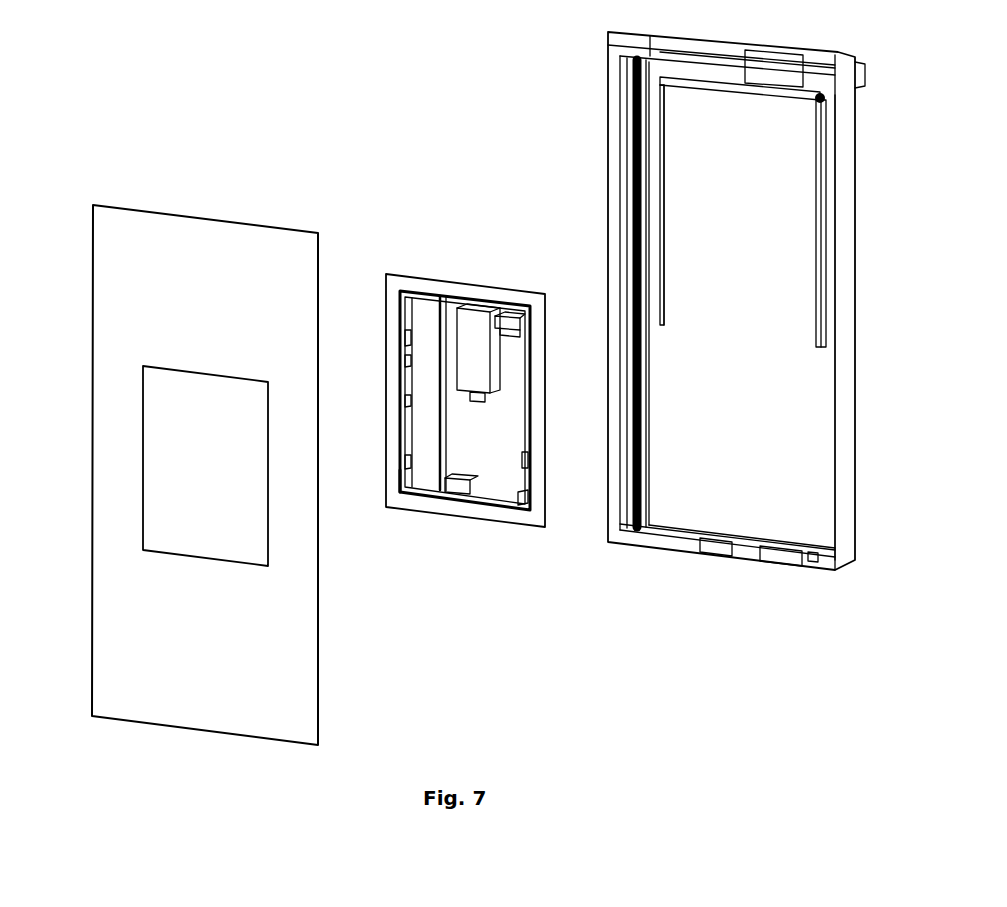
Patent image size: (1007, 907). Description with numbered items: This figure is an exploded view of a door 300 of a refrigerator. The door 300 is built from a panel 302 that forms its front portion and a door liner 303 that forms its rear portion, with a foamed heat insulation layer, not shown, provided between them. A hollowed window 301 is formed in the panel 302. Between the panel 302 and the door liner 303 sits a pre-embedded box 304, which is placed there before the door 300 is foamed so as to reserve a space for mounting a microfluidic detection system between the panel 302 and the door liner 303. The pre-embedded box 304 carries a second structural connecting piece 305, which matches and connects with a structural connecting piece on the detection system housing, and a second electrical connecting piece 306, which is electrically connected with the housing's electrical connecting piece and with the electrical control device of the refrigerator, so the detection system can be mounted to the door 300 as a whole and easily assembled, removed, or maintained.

The door 300 is at (78, 24).
The hollowed window 301 is at (204, 540).
The panel 302 is at (192, 250).
The door liner 303 is at (688, 505).
The pre-embedded box 304 is at (528, 285).
The second structural connecting piece 305 is at (402, 470).
The second electrical connecting piece 306 is at (402, 345).